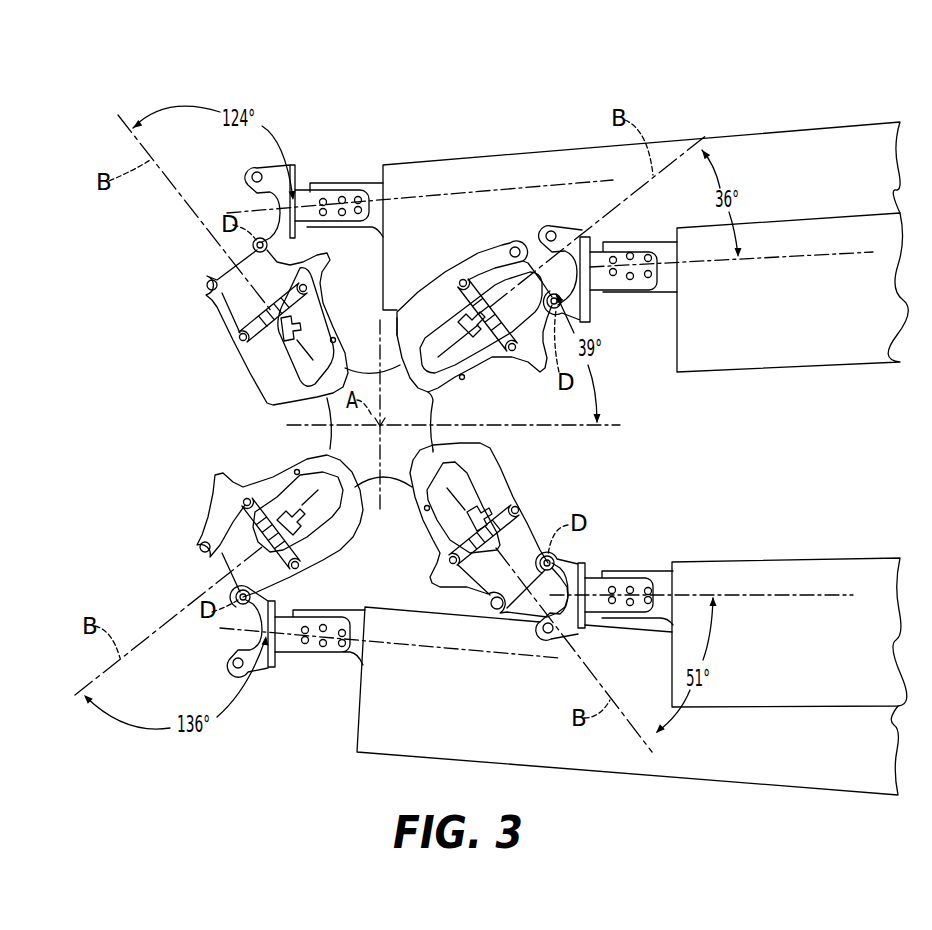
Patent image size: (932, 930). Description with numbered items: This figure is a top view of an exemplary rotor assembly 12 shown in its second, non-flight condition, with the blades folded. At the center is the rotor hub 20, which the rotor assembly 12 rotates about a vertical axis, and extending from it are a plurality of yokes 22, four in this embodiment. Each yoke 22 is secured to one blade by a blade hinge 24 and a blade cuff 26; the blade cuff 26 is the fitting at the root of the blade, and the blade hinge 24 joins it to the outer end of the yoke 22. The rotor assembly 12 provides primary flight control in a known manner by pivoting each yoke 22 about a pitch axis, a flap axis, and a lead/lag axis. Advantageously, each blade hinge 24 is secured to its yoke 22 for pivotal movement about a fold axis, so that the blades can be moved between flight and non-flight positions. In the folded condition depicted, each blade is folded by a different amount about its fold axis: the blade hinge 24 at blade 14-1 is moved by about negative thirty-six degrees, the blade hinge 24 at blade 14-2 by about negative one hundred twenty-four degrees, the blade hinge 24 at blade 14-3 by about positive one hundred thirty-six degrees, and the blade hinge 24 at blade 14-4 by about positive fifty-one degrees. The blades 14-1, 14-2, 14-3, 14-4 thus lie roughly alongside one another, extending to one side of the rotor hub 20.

The rotor assembly 12 is at (330, 440).
The rotor hub 20 is at (434, 415).
The yoke 22 is at (207, 303).
The blade hinge 24 is at (288, 178).
The blade cuff 26 is at (330, 184).
The blade 14-1 is at (790, 372).
The blade 14-2 is at (784, 132).
The blade 14-3 is at (597, 773).
The blade 14-4 is at (798, 560).